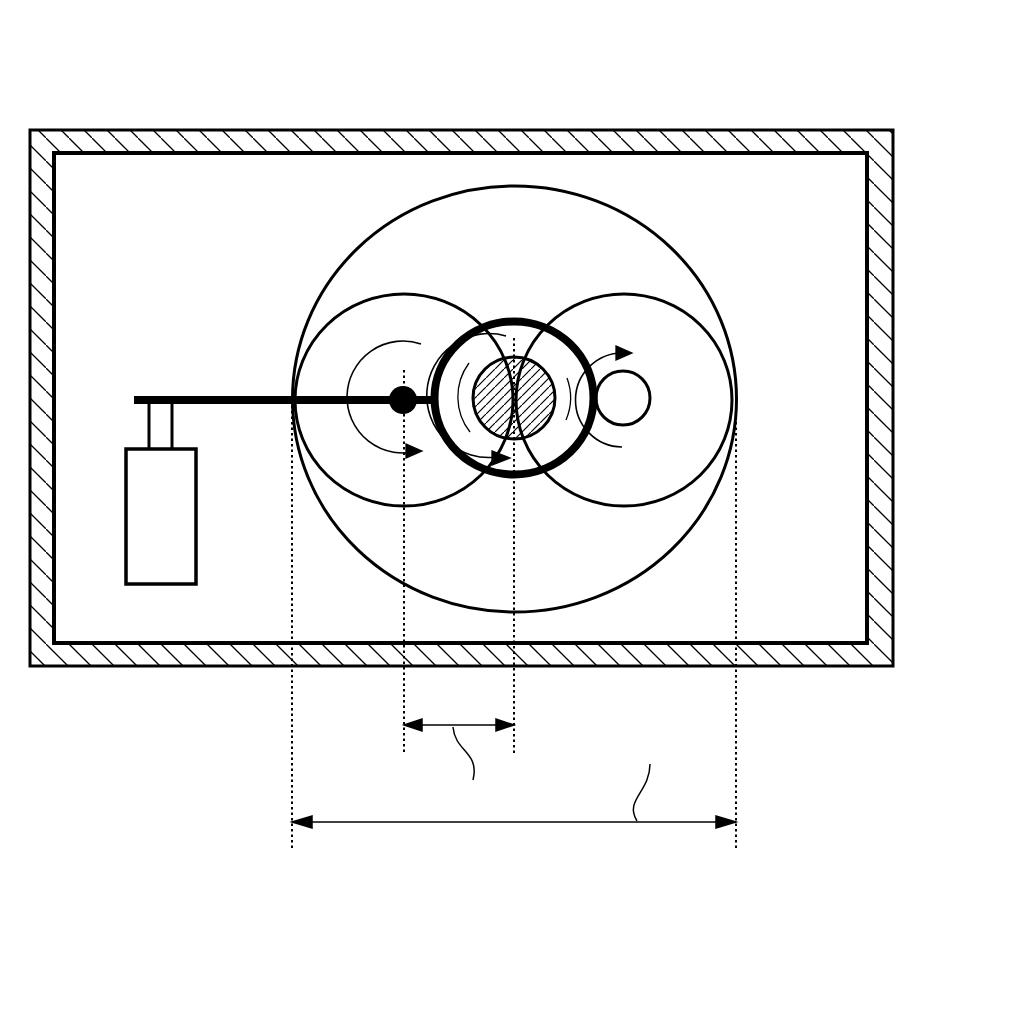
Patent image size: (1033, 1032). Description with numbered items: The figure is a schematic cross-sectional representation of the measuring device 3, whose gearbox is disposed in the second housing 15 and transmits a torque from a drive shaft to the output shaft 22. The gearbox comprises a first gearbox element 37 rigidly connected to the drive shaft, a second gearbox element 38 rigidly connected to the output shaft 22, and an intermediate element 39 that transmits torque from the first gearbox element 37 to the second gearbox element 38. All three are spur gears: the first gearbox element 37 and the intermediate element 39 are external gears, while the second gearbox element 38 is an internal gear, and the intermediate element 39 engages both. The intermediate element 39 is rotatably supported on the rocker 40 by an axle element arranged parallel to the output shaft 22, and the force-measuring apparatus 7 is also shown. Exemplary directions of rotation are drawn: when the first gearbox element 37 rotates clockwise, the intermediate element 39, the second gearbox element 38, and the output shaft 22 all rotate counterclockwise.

The measuring device 3 is at (124, 101).
The second housing 15 is at (668, 129).
The second gearbox element 38 is at (342, 262).
The intermediate element 39 is at (427, 291).
The first gearbox element 37 is at (611, 291).
The rocker 40 is at (206, 396).
The force-measuring apparatus 7 is at (196, 552).
The output shaft 22 is at (547, 433).